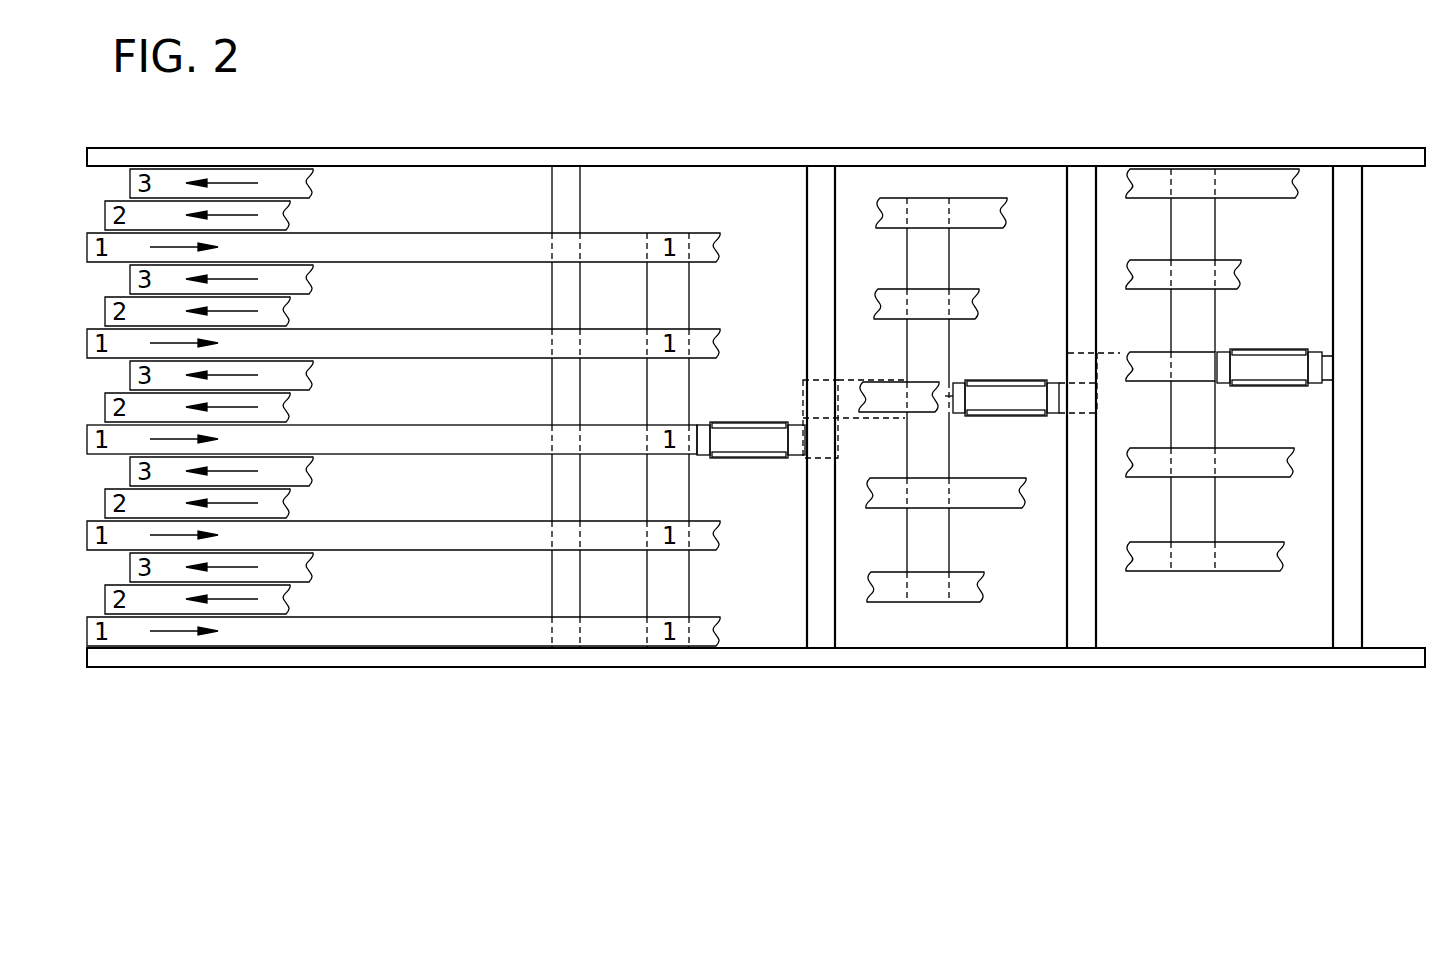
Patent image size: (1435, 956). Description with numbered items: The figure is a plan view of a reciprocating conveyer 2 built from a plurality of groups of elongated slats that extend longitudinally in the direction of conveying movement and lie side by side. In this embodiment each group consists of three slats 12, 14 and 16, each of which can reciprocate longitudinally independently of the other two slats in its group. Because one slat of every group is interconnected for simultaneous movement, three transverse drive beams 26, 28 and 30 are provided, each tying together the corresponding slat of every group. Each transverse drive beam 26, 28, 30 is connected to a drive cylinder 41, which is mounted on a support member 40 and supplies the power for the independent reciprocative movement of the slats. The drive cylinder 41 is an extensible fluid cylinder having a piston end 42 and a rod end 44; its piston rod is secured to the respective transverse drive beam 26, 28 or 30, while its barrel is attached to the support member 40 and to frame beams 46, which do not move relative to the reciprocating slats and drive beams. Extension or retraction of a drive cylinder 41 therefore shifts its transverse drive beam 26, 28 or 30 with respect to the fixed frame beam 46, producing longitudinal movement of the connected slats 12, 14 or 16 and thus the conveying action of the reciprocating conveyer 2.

The reciprocating conveyer 2 is at (749, 119).
The slat 12 is at (86, 242).
The slat 14 is at (104, 210).
The slat 16 is at (128, 179).
The transverse drive beam 26 is at (683, 580).
The transverse drive beam 28 is at (937, 531).
The transverse drive beam 30 is at (1207, 500).
The support member 40 is at (753, 458).
The drive cylinder 41 is at (757, 452).
The piston end 42 is at (790, 421).
The rod end 44 is at (712, 423).
The frame beam 46 is at (823, 619).